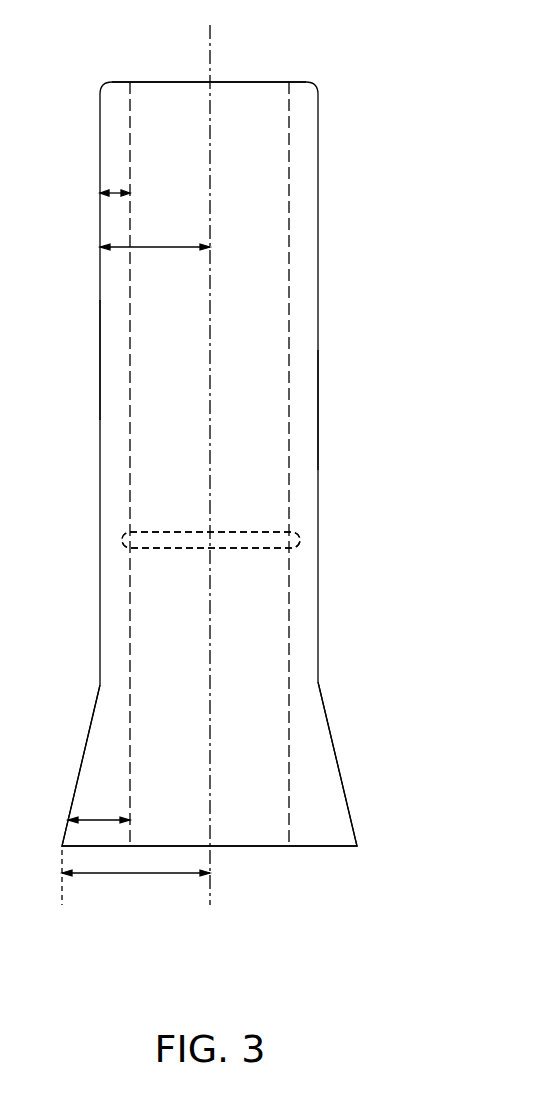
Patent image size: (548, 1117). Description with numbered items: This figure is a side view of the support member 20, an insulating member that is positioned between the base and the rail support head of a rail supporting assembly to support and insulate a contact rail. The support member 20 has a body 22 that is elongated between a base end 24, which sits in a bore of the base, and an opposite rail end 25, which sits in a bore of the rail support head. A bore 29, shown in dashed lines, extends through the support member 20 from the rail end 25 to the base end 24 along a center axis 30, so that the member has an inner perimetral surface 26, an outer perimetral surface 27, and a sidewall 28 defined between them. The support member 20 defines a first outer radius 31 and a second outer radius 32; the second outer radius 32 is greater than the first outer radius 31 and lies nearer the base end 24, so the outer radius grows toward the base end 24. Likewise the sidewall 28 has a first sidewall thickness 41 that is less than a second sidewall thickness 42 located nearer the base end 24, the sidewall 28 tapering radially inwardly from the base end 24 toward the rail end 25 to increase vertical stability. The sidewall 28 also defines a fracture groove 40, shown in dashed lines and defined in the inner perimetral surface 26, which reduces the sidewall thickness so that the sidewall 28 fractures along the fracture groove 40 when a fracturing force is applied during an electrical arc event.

The support member 20 is at (380, 243).
The body 22 is at (115, 368).
The base end 24 is at (318, 775).
The rail end 25 is at (308, 126).
The inner perimetral surface 26 is at (133, 490).
The outer perimetral surface 27 is at (318, 417).
The sidewall 28 is at (118, 93).
The bore 29 is at (250, 106).
The center axis 30 is at (207, 42).
The first outer radius 31 is at (155, 248).
The second outer radius 32 is at (137, 873).
The fracture groove 40 is at (135, 548).
The first sidewall thickness 41 is at (120, 190).
The second sidewall thickness 42 is at (100, 820).